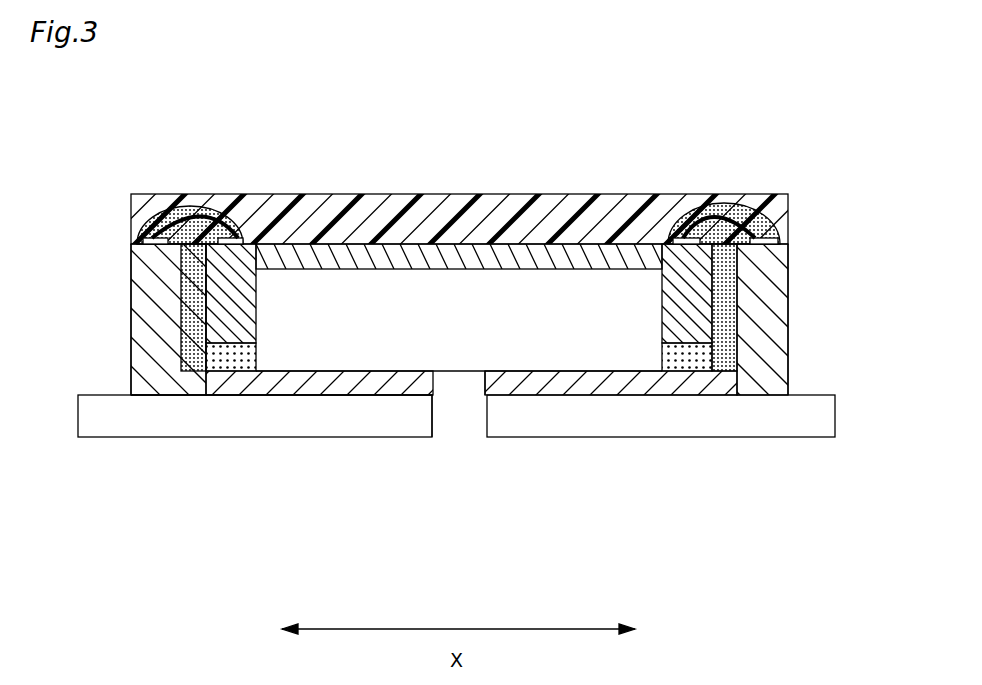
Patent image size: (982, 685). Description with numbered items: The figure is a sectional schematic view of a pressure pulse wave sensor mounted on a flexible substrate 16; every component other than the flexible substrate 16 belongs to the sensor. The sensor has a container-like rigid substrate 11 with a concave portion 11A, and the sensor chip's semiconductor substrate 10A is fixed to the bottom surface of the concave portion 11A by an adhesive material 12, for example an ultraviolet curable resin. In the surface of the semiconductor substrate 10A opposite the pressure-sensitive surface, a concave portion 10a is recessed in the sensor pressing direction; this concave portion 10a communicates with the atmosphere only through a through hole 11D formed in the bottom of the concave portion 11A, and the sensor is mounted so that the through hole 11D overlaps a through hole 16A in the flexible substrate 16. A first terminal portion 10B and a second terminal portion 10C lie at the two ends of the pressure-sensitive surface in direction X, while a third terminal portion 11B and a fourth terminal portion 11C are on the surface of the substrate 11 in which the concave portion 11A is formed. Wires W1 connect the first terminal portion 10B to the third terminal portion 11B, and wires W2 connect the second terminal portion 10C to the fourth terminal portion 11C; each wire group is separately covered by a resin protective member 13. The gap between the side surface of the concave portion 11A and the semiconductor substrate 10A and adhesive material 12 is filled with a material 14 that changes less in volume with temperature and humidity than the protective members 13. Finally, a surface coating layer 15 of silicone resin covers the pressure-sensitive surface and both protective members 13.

The semiconductor substrate 10A is at (410, 258).
The concave portion 10a is at (660, 318).
The first terminal portion 10B is at (246, 218).
The second terminal portion 10C is at (690, 213).
The substrate 11 is at (140, 338).
The concave portion 11A is at (185, 344).
The third terminal portion 11B is at (145, 214).
The fourth terminal portion 11C is at (784, 228).
The through hole 11D is at (485, 378).
The adhesive material 12 is at (214, 368).
The protective member 13 is at (168, 234).
The material 14 is at (188, 272).
The surface coating layer 15 is at (519, 200).
The flexible substrate 16 is at (348, 428).
The through hole 16A is at (432, 437).
The wires W1 is at (203, 208).
The wires W2 is at (718, 206).